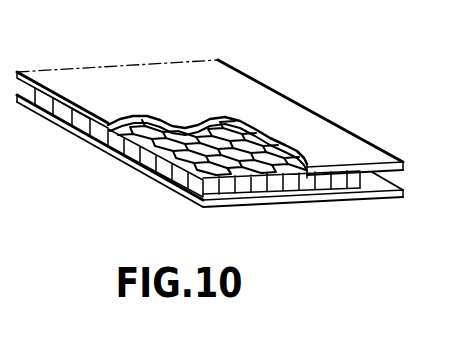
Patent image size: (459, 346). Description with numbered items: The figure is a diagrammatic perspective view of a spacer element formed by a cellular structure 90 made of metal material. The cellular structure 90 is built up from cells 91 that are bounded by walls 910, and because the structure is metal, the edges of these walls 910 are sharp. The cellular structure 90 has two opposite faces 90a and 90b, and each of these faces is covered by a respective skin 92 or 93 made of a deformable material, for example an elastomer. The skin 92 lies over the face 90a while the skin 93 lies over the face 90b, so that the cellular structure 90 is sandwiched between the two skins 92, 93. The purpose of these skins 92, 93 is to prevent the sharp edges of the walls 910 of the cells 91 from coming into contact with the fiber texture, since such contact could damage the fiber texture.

The cellular structure 90 is at (137, 171).
The face of the cellular structure 90a is at (270, 150).
The face of the cellular structure 90b is at (278, 203).
The cells 91 is at (185, 129).
The skin 92 is at (183, 70).
The skin 93 is at (180, 199).
The walls 910 is at (84, 135).